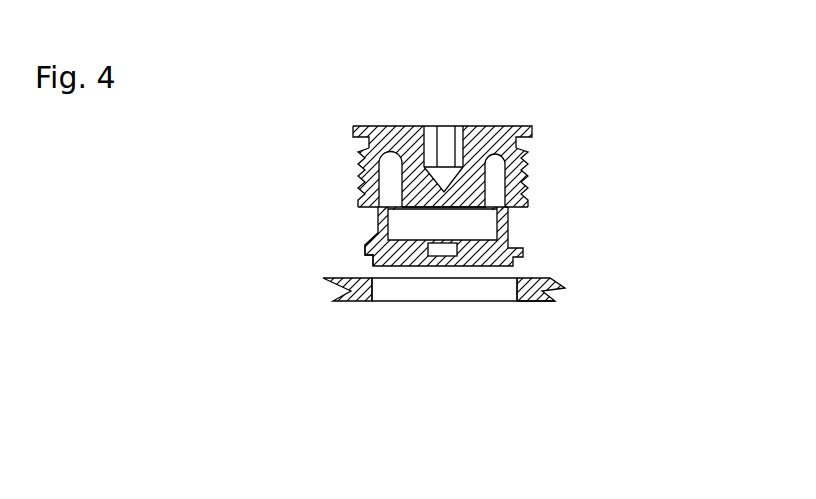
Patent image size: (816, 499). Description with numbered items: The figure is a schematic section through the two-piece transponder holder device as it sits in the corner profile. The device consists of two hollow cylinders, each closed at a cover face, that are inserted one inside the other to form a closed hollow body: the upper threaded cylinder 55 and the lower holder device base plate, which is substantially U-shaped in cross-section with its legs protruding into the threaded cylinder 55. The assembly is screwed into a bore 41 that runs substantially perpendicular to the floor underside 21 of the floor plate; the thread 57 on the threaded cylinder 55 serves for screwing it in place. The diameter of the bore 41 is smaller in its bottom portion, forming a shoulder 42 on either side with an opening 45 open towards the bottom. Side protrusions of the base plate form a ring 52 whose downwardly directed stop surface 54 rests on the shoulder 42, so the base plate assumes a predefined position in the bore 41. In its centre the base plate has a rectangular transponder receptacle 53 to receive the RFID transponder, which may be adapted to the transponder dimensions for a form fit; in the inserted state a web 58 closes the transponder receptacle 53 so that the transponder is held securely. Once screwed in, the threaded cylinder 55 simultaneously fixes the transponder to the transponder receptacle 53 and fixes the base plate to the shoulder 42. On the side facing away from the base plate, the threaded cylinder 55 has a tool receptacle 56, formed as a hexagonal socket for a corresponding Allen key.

The floor underside 21 is at (551, 304).
The bore 41 is at (435, 312).
The shoulder 42 is at (529, 294).
The opening 45 is at (487, 294).
The ring 52 is at (522, 251).
The transponder receptacle 53 is at (442, 252).
The stop surface 54 is at (372, 258).
The threaded cylinder 55 is at (507, 133).
The tool receptacle 56 is at (440, 124).
The thread 57 is at (352, 177).
The web 58 is at (455, 197).